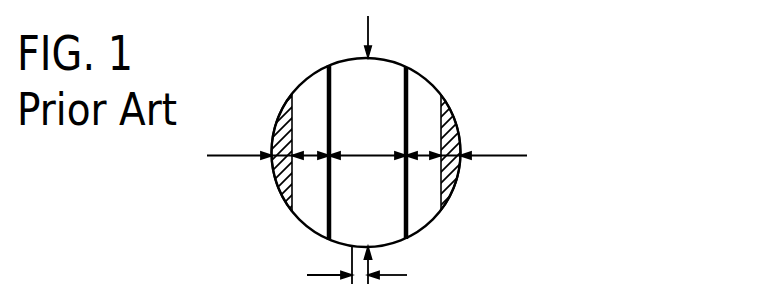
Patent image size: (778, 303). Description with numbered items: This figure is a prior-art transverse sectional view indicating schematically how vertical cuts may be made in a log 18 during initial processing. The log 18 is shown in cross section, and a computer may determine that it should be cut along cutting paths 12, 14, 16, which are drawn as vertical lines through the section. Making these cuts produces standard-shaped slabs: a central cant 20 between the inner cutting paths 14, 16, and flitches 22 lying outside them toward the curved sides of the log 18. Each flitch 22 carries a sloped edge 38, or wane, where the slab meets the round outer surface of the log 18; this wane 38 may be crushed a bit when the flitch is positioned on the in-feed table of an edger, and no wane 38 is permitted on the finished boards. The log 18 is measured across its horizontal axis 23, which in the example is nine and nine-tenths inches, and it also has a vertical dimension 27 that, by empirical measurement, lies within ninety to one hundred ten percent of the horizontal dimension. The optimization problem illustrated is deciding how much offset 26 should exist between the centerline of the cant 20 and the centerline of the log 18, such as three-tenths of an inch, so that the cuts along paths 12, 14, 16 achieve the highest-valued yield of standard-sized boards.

The cutting path 12 is at (290, 117).
The cutting path 14 is at (323, 69).
The cutting path 16 is at (408, 92).
The log 18 is at (470, 94).
The cant 20 is at (385, 228).
The flitch 22 is at (311, 209).
The horizontal axis 23 is at (484, 157).
The offset 26 is at (323, 274).
The vertical dimension 27 is at (368, 28).
The sloped edge (wane) 38 is at (437, 84).